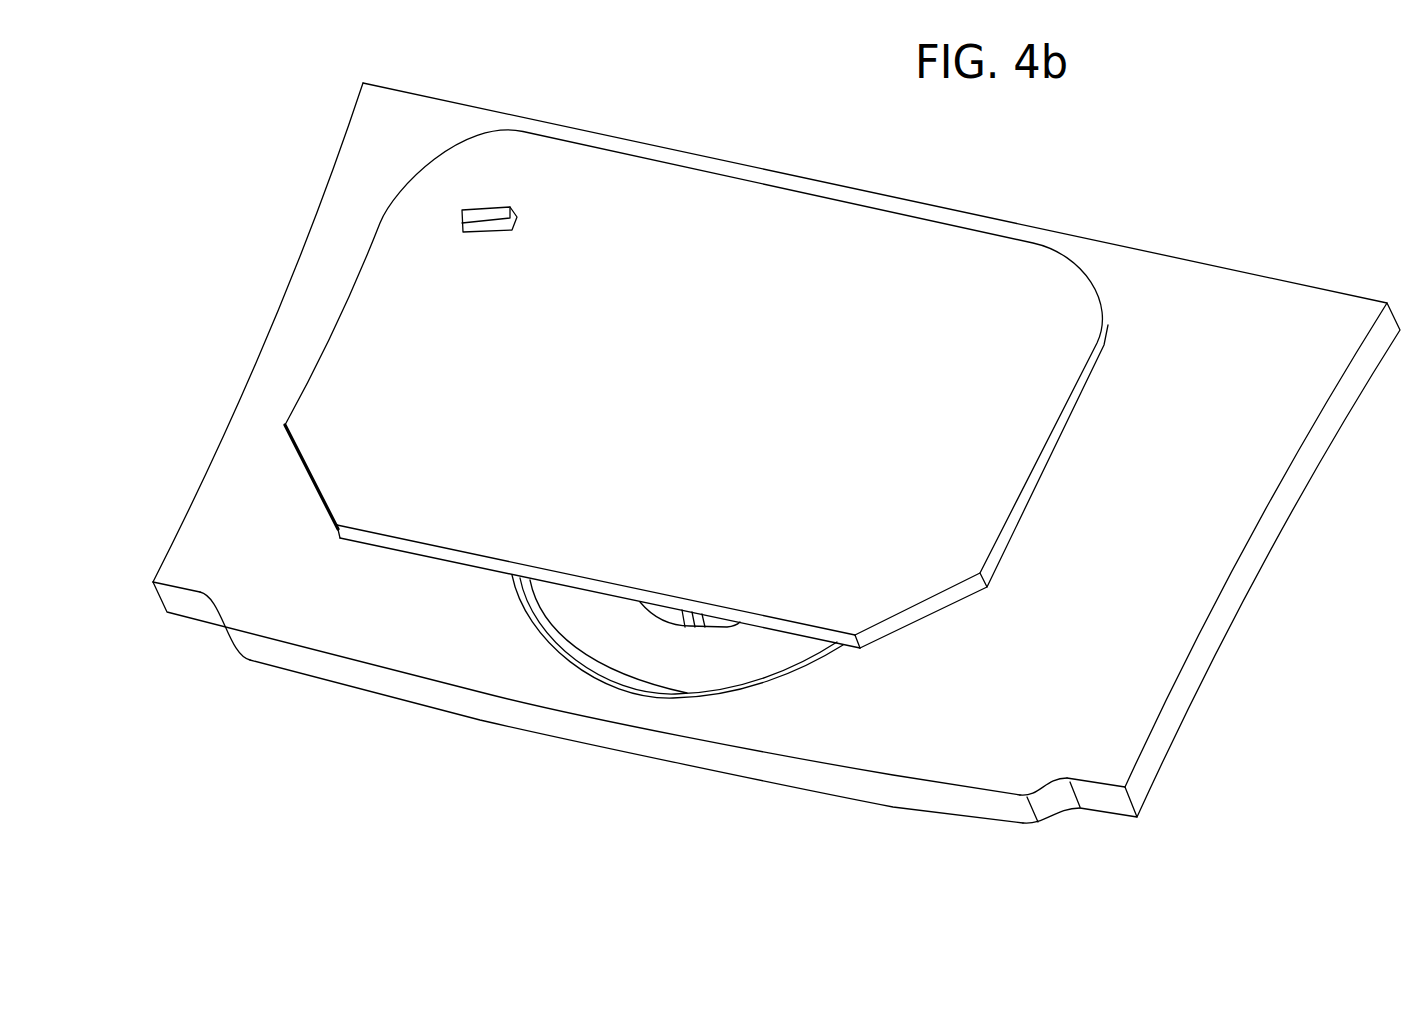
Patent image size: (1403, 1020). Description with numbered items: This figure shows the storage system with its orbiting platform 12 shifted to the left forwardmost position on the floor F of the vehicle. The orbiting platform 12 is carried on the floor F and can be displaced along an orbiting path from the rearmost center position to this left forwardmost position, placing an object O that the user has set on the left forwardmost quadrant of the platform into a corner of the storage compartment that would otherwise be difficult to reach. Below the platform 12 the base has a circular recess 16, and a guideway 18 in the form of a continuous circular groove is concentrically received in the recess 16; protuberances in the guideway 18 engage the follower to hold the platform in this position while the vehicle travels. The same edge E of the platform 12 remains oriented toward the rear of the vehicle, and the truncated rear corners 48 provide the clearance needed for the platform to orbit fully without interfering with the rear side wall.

The floor F is at (445, 113).
The object O is at (483, 207).
The orbiting platform 12 is at (696, 436).
The edge E is at (460, 553).
The circular recess 16 is at (633, 662).
The guideway 18 is at (713, 623).
The truncated rear corners 48 is at (313, 487).